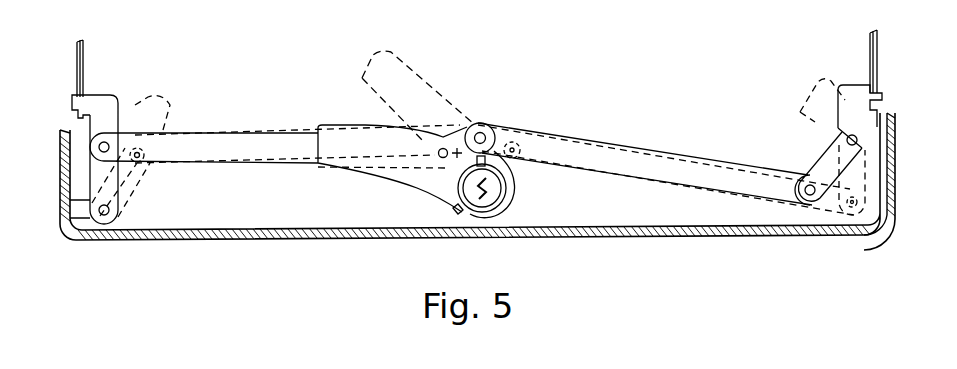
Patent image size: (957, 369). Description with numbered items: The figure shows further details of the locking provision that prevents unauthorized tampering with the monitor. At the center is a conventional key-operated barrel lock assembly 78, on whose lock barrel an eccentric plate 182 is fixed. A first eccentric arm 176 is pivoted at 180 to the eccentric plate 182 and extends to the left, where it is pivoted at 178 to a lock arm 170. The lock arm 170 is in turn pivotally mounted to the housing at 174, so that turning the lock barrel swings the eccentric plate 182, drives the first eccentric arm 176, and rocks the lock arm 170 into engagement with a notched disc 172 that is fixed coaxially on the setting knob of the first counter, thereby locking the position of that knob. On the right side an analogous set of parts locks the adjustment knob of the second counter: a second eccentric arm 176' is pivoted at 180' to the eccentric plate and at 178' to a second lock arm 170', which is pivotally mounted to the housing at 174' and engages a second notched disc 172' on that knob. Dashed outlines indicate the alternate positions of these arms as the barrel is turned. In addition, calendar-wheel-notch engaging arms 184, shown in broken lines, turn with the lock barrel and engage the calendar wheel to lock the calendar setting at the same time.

The barrel lock assembly 78 is at (522, 204).
The lock arm 170 is at (112, 86).
The notched disc 172 is at (109, 60).
The pivotal mounting 174 is at (108, 195).
The first eccentric arm 176 is at (204, 129).
The pivot 178 is at (63, 158).
The pivot 180 is at (420, 182).
The eccentric plate 182 is at (462, 133).
The calendar-wheel-notch engaging arms 184 is at (397, 60).
The lock arm 170' is at (847, 97).
The notched disc 172' is at (840, 54).
The pivotal mounting 174' is at (897, 158).
The eccentric arm 176' is at (645, 159).
The pivot 178' is at (828, 200).
The pivot 180' is at (540, 125).